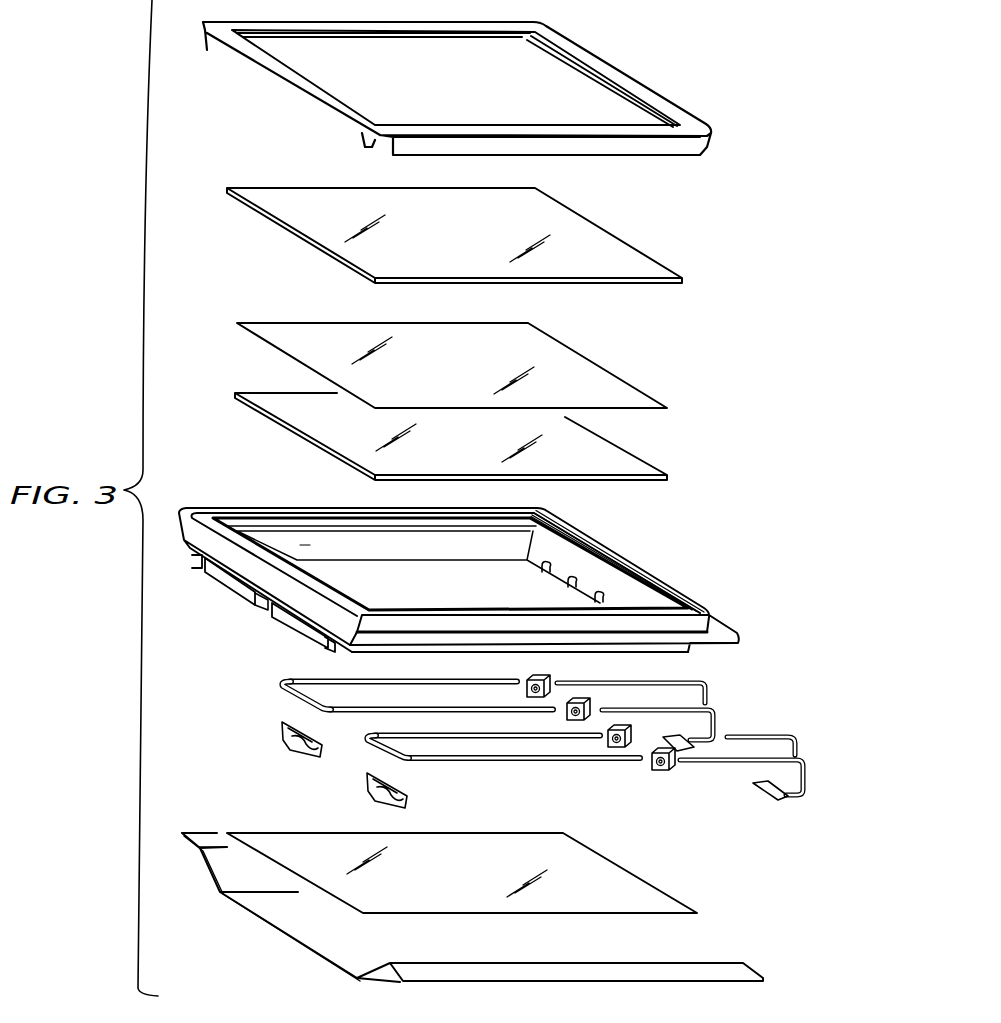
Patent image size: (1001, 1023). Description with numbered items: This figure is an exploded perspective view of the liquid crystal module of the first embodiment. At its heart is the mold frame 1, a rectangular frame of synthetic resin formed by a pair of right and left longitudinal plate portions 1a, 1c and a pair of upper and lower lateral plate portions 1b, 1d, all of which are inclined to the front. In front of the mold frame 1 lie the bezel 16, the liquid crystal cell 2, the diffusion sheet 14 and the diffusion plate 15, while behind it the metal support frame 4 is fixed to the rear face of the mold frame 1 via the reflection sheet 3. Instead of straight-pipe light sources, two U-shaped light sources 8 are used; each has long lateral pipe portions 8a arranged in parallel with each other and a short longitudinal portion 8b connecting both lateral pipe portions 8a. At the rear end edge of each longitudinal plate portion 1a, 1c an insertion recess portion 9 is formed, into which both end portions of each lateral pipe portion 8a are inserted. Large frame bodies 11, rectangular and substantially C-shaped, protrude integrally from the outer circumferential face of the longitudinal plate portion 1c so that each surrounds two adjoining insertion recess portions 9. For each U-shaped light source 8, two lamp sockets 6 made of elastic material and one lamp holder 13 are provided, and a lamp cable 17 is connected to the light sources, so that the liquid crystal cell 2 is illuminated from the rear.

The mold frame 1 is at (652, 566).
The longitudinal plate portion 1a is at (562, 572).
The lateral plate portion 1b is at (615, 653).
The longitudinal plate portion 1c is at (268, 606).
The lateral plate portion 1d is at (298, 547).
The liquid crystal cell 2 is at (607, 236).
The reflection sheet 3 is at (603, 878).
The support frame 4 is at (647, 953).
The lamp socket 6 is at (548, 678).
The U-shaped light source 8 is at (270, 682).
The lateral pipe portion 8a is at (365, 705).
The longitudinal portion 8b is at (297, 702).
The insertion recess portion 9 is at (572, 590).
The large frame body 11 is at (233, 582).
The lamp holder 13 is at (361, 793).
The diffusion sheet 14 is at (583, 377).
The diffusion plate 15 is at (600, 462).
The bezel 16 is at (607, 72).
The lamp cable 17 is at (749, 720).